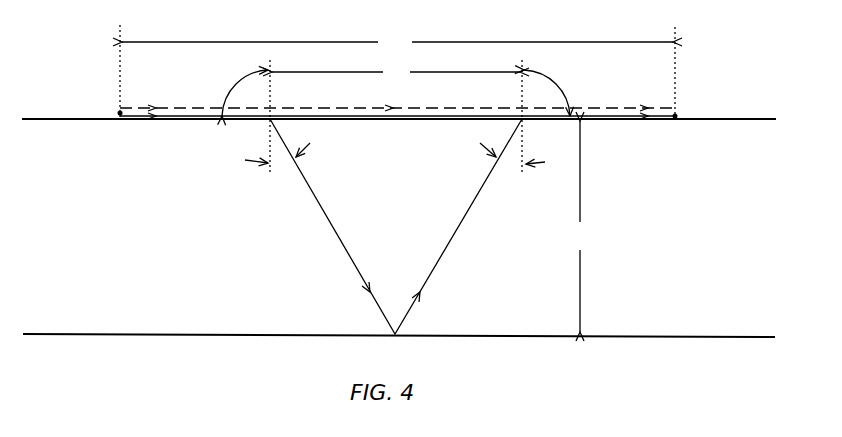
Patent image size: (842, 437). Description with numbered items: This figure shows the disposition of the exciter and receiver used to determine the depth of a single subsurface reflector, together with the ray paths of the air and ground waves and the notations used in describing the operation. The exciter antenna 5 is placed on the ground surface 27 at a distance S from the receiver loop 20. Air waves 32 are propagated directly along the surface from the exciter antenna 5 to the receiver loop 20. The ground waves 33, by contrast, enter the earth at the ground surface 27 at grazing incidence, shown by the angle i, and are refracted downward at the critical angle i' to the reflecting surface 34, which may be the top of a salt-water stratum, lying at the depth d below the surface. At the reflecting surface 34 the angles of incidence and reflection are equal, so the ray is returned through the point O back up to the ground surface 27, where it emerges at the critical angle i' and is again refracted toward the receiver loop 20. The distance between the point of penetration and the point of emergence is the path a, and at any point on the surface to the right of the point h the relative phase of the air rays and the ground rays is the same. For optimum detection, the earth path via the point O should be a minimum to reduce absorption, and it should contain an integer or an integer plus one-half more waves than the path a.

The exciter antenna 5 is at (118, 112).
The receiver loop 20 is at (678, 114).
The ground surface 27 is at (92, 119).
The air waves 32 is at (300, 108).
The ground waves 33 is at (327, 222).
The reflecting surface 34 is at (287, 333).
The distance between transmitter and receiver S is at (397, 42).
The path a is at (396, 72).
The depth d is at (573, 226).
The point h is at (520, 118).
The point o O is at (396, 352).
The angle of incidence i is at (396, 93).
The critical angle i' is at (395, 157).